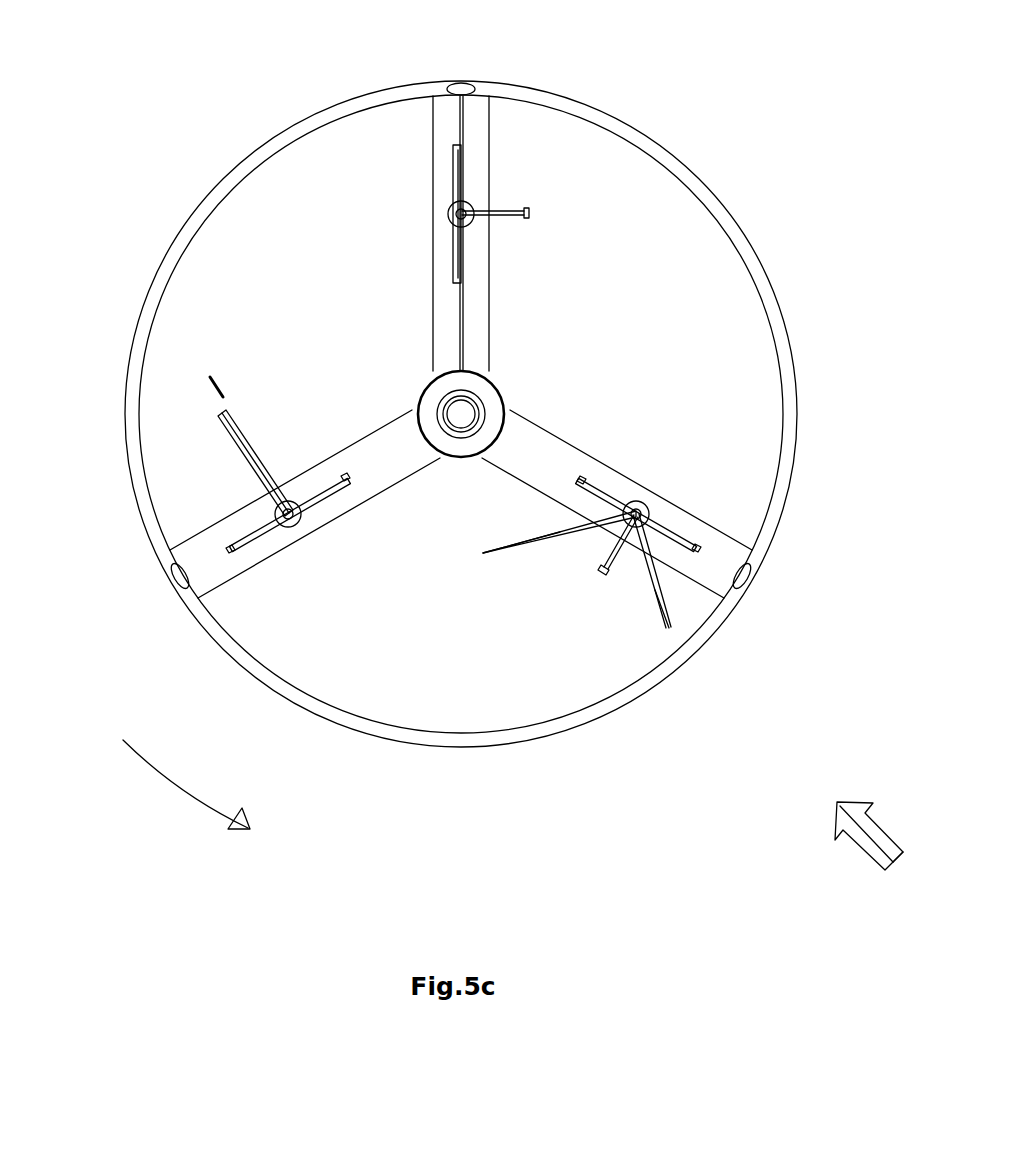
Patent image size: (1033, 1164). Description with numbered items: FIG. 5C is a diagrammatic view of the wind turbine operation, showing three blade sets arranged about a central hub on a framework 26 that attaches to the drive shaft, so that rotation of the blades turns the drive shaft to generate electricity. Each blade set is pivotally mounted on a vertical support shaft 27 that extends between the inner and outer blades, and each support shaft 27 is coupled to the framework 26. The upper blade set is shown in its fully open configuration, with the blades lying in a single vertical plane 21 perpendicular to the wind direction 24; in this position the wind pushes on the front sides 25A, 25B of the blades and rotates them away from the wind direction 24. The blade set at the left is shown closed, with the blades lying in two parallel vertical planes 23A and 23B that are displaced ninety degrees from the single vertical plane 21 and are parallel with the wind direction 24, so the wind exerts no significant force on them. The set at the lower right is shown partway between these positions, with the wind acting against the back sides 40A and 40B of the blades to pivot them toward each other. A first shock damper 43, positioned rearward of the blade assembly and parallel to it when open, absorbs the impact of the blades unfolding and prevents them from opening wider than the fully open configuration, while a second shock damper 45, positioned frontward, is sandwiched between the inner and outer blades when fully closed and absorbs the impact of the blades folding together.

The single vertical plane 21 is at (466, 325).
The parallel vertical plane 23A is at (211, 375).
The parallel vertical plane 23B is at (221, 412).
The wind direction 24 is at (863, 847).
The front side of inner blade 25A is at (520, 548).
The front side of outer blade 25B is at (657, 603).
The framework 26 is at (543, 445).
The vertical support shaft 27 is at (638, 501).
The back side of inner blade 40A is at (532, 537).
The back side of outer blade 40B is at (664, 579).
The first shock damper 43 is at (508, 205).
The second shock damper 45 is at (452, 259).